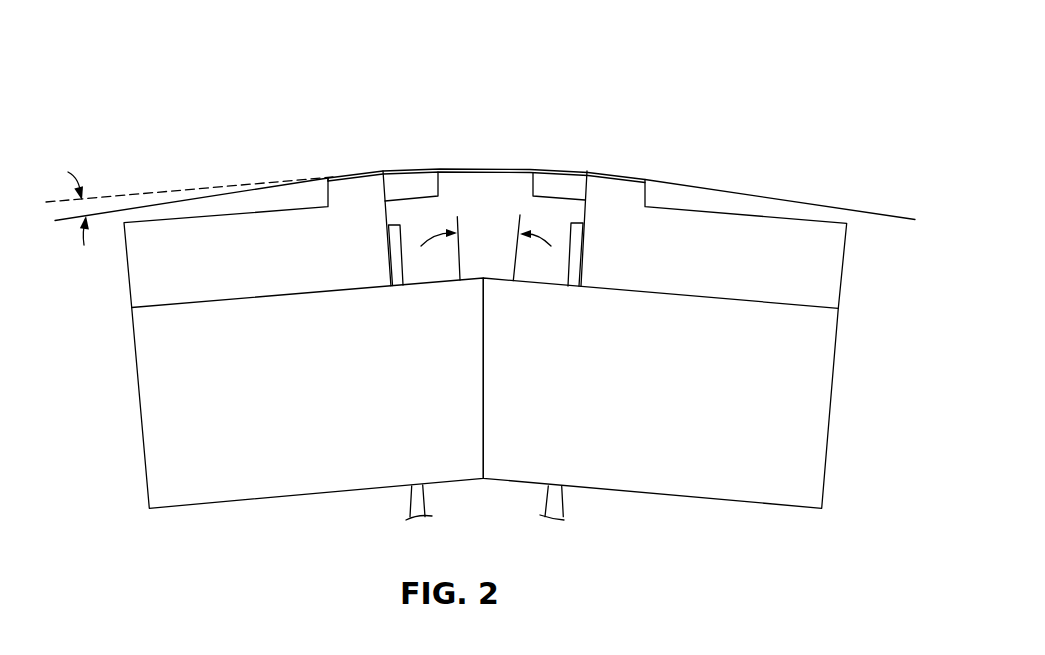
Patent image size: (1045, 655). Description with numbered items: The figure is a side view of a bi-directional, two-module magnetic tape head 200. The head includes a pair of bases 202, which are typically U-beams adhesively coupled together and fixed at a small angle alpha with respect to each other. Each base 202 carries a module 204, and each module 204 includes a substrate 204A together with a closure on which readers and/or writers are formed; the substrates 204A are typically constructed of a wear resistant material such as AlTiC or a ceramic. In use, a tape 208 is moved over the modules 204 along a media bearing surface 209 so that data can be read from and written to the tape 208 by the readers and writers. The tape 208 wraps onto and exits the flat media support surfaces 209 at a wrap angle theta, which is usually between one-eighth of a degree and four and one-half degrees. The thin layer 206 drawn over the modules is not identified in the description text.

The bi-directional, two-module magnetic tape head 200 is at (187, 131).
The base 202 is at (135, 382).
The module 204 is at (126, 273).
The substrate 204A is at (193, 247).
The thin film layer 206 is at (386, 166).
The tape 208 is at (750, 193).
The media (tape) bearing surface 209 is at (333, 172).